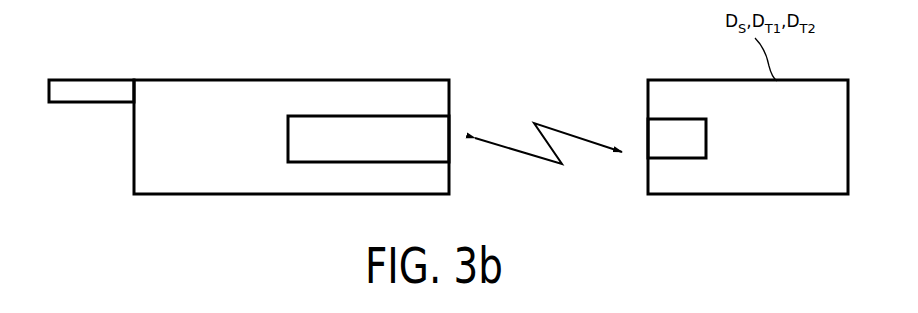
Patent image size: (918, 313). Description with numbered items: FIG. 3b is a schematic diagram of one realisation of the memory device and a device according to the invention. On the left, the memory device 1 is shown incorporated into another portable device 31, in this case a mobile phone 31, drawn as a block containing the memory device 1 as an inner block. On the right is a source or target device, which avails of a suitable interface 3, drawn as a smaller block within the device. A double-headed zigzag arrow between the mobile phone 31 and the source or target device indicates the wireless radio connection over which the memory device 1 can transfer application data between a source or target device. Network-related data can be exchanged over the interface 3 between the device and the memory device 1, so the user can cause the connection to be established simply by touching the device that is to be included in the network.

The memory device 1 is at (361, 115).
The portable device 31 is at (282, 81).
The interface 3 is at (674, 118).